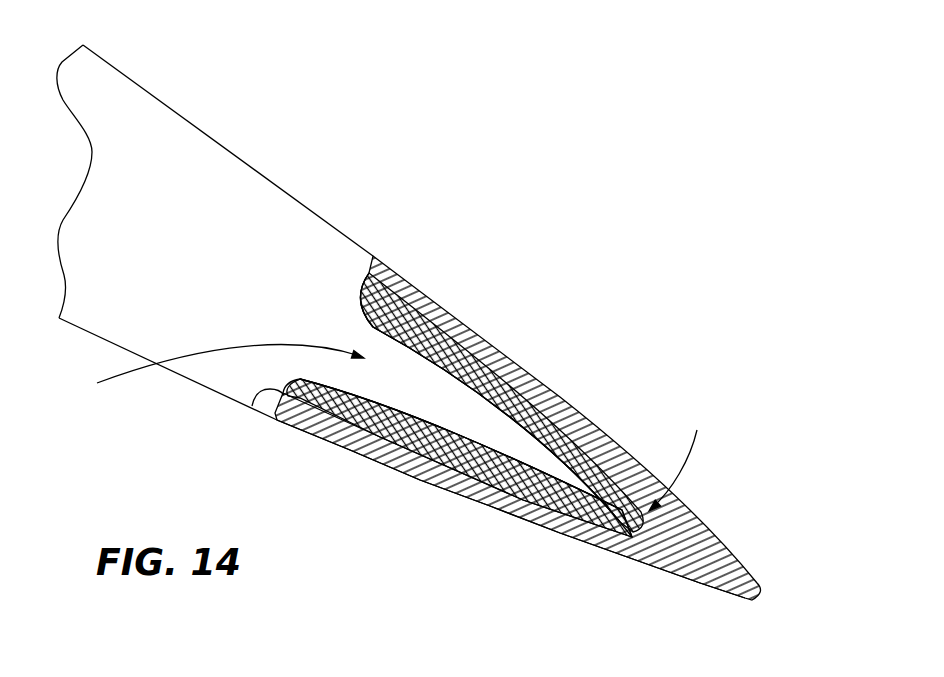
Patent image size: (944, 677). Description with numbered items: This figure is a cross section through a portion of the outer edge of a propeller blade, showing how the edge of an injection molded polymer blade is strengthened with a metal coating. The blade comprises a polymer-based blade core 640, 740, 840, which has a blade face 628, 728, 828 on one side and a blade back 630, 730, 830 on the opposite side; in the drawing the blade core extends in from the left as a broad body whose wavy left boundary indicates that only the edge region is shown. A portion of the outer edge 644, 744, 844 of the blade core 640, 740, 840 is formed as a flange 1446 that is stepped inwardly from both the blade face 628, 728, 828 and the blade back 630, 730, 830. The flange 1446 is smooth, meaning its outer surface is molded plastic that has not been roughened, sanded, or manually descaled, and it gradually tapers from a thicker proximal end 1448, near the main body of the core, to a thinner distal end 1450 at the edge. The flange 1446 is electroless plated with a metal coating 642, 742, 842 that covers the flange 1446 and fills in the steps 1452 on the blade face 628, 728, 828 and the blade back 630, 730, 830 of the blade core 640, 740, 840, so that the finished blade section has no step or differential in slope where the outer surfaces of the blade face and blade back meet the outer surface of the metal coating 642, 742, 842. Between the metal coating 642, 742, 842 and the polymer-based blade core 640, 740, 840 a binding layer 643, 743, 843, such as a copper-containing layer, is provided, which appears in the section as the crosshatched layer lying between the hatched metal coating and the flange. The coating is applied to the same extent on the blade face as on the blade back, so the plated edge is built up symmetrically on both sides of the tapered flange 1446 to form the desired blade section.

The blade back 630 is at (228, 150).
The blade back 730 is at (228, 150).
The blade back 830 is at (137, 83).
The polymer-based blade core 640 is at (257, 181).
The polymer-based blade core 740 is at (257, 181).
The polymer-based blade core 840 is at (221, 253).
The blade face 628 is at (147, 387).
The blade face 728 is at (147, 387).
The blade face 828 is at (193, 383).
The binding layer 643 is at (518, 428).
The binding layer 743 is at (518, 428).
The binding layer 843 is at (448, 317).
The metal coating 642 is at (573, 488).
The metal coating 742 is at (573, 488).
The metal coating 842 is at (688, 553).
The outer edge 644 is at (448, 500).
The outer edge 744 is at (448, 500).
The outer edge 844 is at (607, 590).
The flange 1446 is at (452, 412).
The thicker proximal end 1448 is at (204, 374).
The thinner distal end 1450 is at (685, 457).
The steps 1452 is at (367, 273).